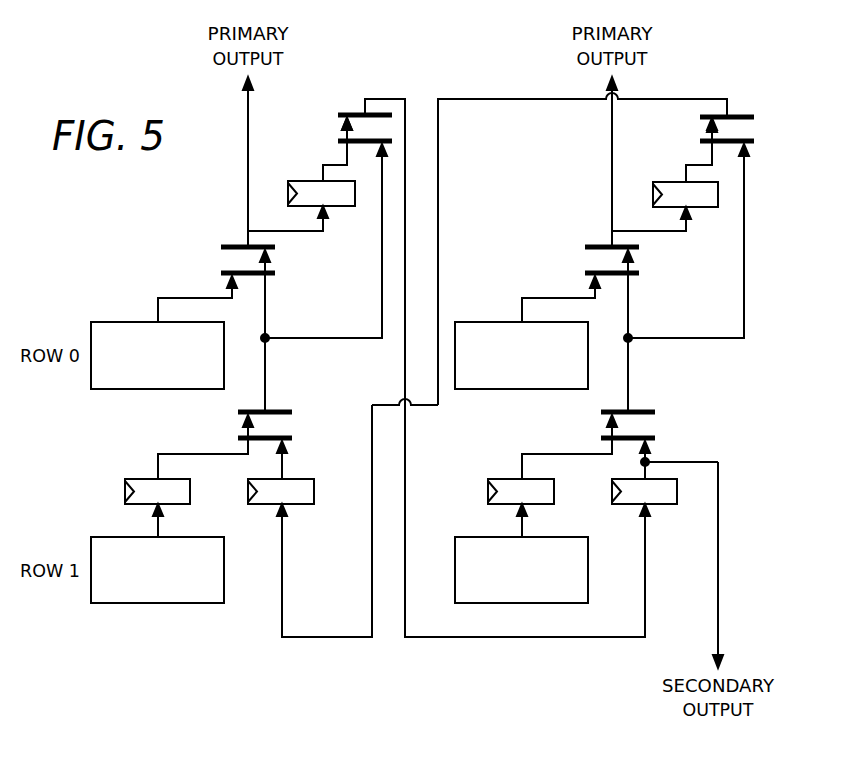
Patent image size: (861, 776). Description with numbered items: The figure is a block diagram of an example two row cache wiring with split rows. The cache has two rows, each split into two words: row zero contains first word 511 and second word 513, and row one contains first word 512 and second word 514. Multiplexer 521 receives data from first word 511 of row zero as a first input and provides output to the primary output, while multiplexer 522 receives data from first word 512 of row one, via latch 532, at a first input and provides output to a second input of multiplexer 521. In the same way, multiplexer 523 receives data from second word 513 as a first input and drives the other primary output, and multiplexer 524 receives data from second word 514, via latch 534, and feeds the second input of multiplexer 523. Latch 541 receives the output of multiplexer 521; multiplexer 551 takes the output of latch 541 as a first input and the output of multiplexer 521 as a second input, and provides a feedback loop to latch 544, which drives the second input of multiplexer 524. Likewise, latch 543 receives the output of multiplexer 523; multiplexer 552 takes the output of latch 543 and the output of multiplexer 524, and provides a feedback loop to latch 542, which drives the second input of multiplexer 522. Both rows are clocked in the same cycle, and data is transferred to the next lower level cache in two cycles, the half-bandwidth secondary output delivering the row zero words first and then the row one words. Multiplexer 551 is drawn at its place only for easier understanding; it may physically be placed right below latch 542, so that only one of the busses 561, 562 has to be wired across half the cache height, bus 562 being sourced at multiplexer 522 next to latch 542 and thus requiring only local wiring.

The word 0 of row 0 511 is at (112, 322).
The word 0 of row 1 512 is at (112, 537).
The word 1 of row 0 513 is at (493, 322).
The word 1 of row 1 514 is at (477, 537).
The multiplexer 521 is at (233, 244).
The multiplexer 522 is at (280, 408).
The multiplexer 523 is at (600, 244).
The multiplexer 524 is at (640, 408).
The latch 532 is at (143, 478).
The latch 534 is at (508, 478).
The latch 541 is at (333, 207).
The latch 542 is at (289, 478).
The latch 543 is at (672, 181).
The latch 544 is at (657, 505).
The multiplexer 551 is at (353, 111).
The multiplexer 552 is at (733, 112).
The bus 561 is at (330, 164).
The bus 562 is at (358, 337).